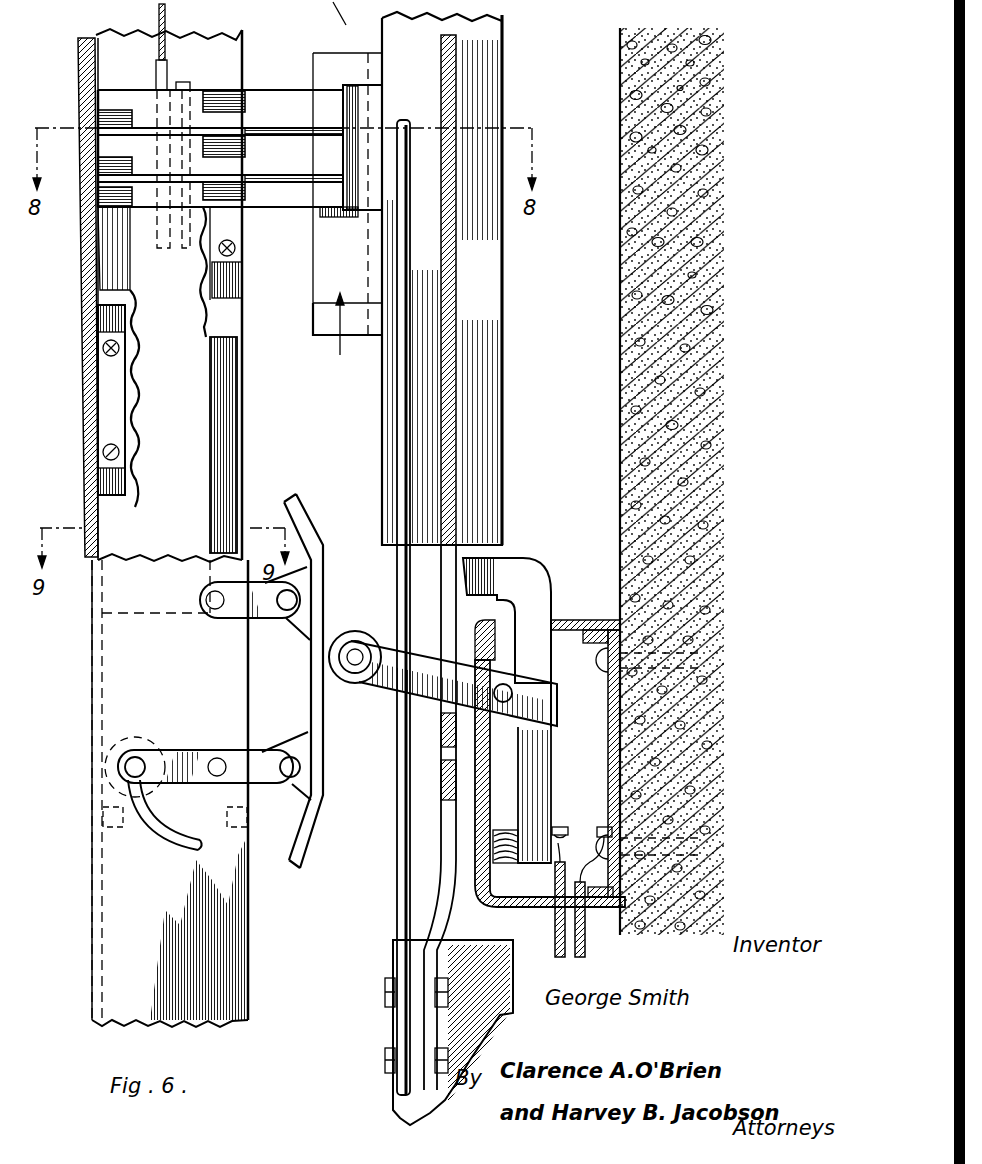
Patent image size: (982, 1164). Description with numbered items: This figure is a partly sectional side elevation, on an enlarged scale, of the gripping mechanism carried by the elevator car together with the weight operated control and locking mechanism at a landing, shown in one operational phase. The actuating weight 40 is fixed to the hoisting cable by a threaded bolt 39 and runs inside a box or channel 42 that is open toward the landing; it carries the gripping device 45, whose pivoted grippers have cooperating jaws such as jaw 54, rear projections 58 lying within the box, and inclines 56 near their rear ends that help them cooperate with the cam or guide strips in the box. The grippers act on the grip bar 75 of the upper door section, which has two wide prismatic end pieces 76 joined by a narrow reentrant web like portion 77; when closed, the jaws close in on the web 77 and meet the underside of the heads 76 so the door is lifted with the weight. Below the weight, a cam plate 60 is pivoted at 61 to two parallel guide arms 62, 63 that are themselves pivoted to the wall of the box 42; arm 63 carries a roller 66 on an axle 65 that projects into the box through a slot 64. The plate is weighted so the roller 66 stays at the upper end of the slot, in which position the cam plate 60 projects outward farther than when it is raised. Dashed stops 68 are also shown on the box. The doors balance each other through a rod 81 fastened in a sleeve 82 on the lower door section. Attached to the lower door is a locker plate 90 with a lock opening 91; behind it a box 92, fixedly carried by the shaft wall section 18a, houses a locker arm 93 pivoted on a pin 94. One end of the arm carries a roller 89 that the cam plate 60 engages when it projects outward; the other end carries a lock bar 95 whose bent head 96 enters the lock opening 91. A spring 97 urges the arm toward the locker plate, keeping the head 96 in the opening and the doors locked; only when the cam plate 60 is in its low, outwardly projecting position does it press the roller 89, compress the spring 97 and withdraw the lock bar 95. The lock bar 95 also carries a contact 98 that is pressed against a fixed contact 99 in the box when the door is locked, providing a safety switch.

The wall section 18a is at (712, 590).
The threaded bolt 39 is at (157, 238).
The actuating weight 40 is at (200, 447).
The box or channel 42 is at (86, 415).
The gripping device 45 is at (250, 215).
The jaw 54 is at (332, 95).
The incline 56 is at (98, 123).
The rear projection / stop 58 is at (112, 95).
The cam plate 60 is at (323, 802).
The pivot 61 is at (294, 597).
The guide arm 62 is at (258, 620).
The guide arm 63 is at (255, 757).
The slot 64 is at (166, 836).
The axle 65 is at (134, 758).
The roller 66 is at (106, 779).
The stops 68 is at (103, 822).
The grip bar 75 is at (341, 336).
The prismatic end piece 76 is at (315, 62).
The web like portion 77 is at (325, 272).
The rod 81 is at (398, 470).
The sleeve 82 is at (405, 1022).
The roller 89 is at (360, 632).
The locker plate 90 is at (450, 503).
The lock opening 91 is at (446, 776).
The box 92 is at (518, 908).
The locker arm 93 is at (393, 680).
The pin 94 is at (505, 693).
The lock bar 95 is at (540, 792).
The bent head 96 is at (484, 562).
The spring 97 is at (505, 830).
The contact 98 is at (562, 828).
The fixed contact 99 is at (598, 835).